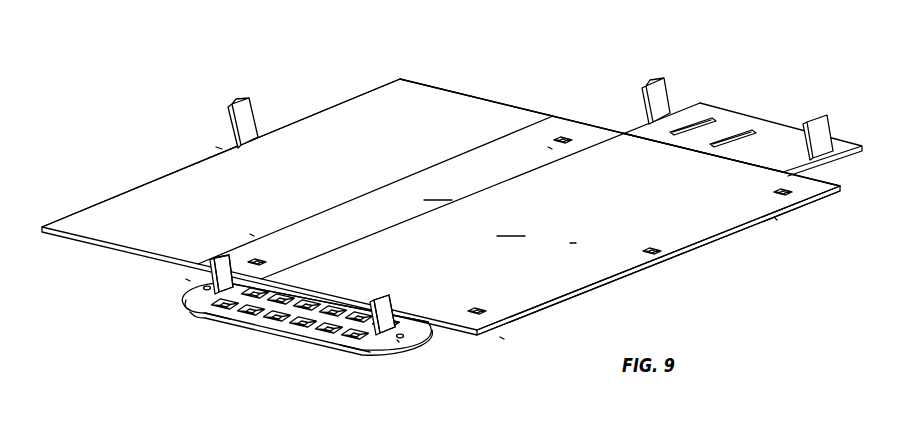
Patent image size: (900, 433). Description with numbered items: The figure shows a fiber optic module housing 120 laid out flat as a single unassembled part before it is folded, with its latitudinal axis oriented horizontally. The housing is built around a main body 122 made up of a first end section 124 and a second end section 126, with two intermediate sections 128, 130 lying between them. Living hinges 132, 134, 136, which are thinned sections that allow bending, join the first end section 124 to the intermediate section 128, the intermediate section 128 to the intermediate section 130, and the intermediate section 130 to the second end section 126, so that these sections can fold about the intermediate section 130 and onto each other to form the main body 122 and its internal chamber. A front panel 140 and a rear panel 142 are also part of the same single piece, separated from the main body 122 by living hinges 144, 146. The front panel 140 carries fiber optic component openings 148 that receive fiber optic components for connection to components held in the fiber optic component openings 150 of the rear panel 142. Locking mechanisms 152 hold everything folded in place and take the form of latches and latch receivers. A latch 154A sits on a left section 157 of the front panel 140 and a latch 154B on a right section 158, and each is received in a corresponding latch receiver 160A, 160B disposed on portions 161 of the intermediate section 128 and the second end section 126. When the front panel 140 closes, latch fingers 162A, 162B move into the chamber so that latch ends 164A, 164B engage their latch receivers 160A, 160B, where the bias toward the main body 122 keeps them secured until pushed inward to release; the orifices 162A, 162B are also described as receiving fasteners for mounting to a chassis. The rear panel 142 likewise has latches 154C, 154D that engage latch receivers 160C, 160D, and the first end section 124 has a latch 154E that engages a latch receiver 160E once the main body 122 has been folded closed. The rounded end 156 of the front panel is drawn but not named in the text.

The fiber optic module housing 120 is at (557, 90).
The main body 122 is at (592, 120).
The first end section 124 is at (381, 160).
The second end section 126 is at (573, 293).
The intermediate section 128 is at (438, 189).
The intermediate section 130 is at (511, 225).
The living hinge 132 is at (357, 197).
The living hinge 134 is at (425, 213).
The living hinge 136 is at (573, 243).
The front panel 140 is at (282, 347).
The rear panel 142 is at (727, 100).
The living hinge 144 is at (325, 295).
The living hinge 146 is at (678, 148).
The fiber optic component openings 148 is at (291, 294).
The fiber optic component openings 150 is at (692, 122).
The locking mechanisms 152 is at (218, 146).
The latch 154A is at (218, 272).
The latch 154B is at (396, 306).
The latch 154C is at (651, 72).
The latch 154D is at (840, 113).
The latch 154E is at (258, 107).
The rounded end 156 is at (188, 305).
The left section 157 is at (205, 313).
The right section 158 is at (370, 347).
The latch receiver 160A is at (259, 260).
The latch receiver 160B is at (478, 309).
The latch receiver 160C is at (558, 136).
The latch receiver 160D is at (785, 196).
The latch receiver 160E is at (658, 254).
The portions 161 is at (252, 233).
The latch finger 162A is at (200, 292).
The latch finger 162B is at (403, 338).
The latch end 164A is at (213, 275).
The latch end 164B is at (385, 297).